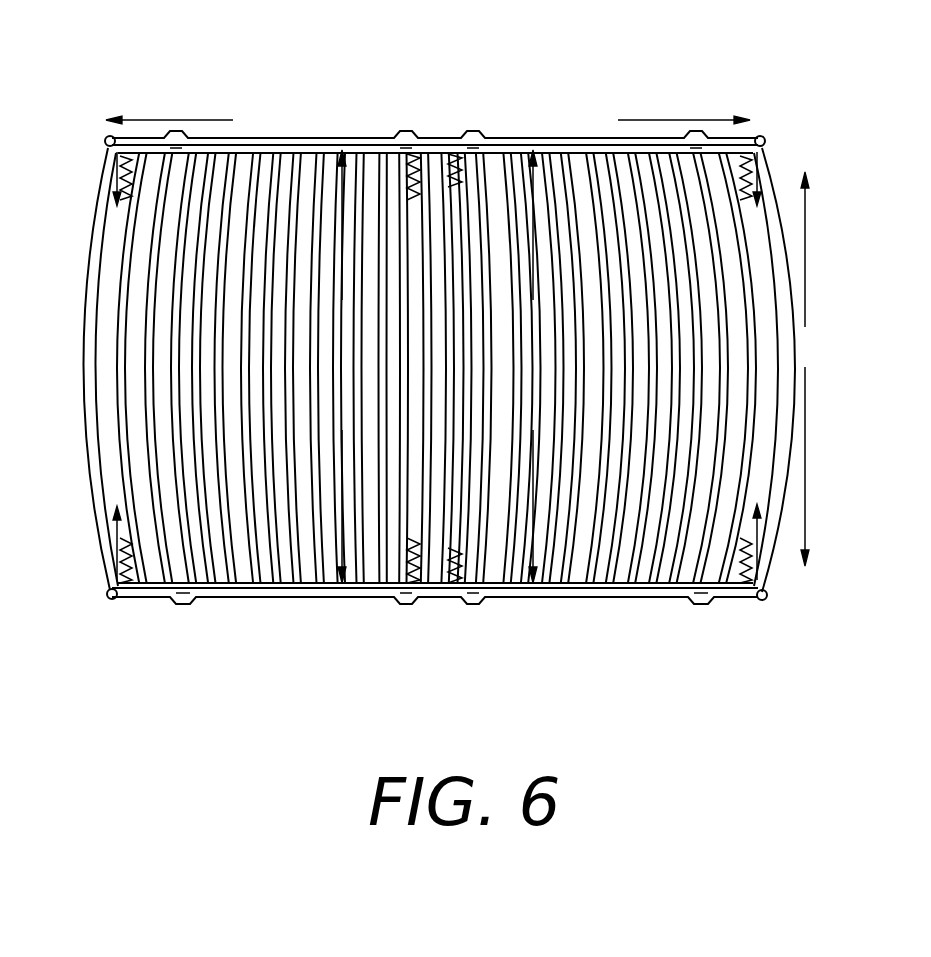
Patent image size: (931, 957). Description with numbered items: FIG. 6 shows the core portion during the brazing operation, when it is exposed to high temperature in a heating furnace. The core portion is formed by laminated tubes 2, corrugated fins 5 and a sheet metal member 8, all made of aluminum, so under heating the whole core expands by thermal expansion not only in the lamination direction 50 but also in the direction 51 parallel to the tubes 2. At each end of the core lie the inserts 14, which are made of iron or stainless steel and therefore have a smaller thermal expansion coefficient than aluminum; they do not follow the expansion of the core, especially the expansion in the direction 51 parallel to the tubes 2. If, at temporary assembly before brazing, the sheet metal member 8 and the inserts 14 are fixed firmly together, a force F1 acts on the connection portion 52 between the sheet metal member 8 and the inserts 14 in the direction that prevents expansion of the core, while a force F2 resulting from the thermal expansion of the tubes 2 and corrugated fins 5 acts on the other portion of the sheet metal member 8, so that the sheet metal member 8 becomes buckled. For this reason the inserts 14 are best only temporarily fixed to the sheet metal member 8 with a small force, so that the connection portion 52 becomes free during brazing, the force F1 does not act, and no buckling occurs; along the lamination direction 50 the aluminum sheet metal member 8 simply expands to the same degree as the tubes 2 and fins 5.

The tube 2 is at (120, 405).
The corrugated fin 5 is at (104, 262).
The sheet metal member 8 is at (276, 138).
The insert 14 is at (100, 500).
The lamination direction 50 is at (632, 116).
The direction parallel to tubes 51 is at (806, 234).
The connection portion 52 is at (106, 137).
The force F1 is at (832, 140).
The force F2 is at (532, 190).